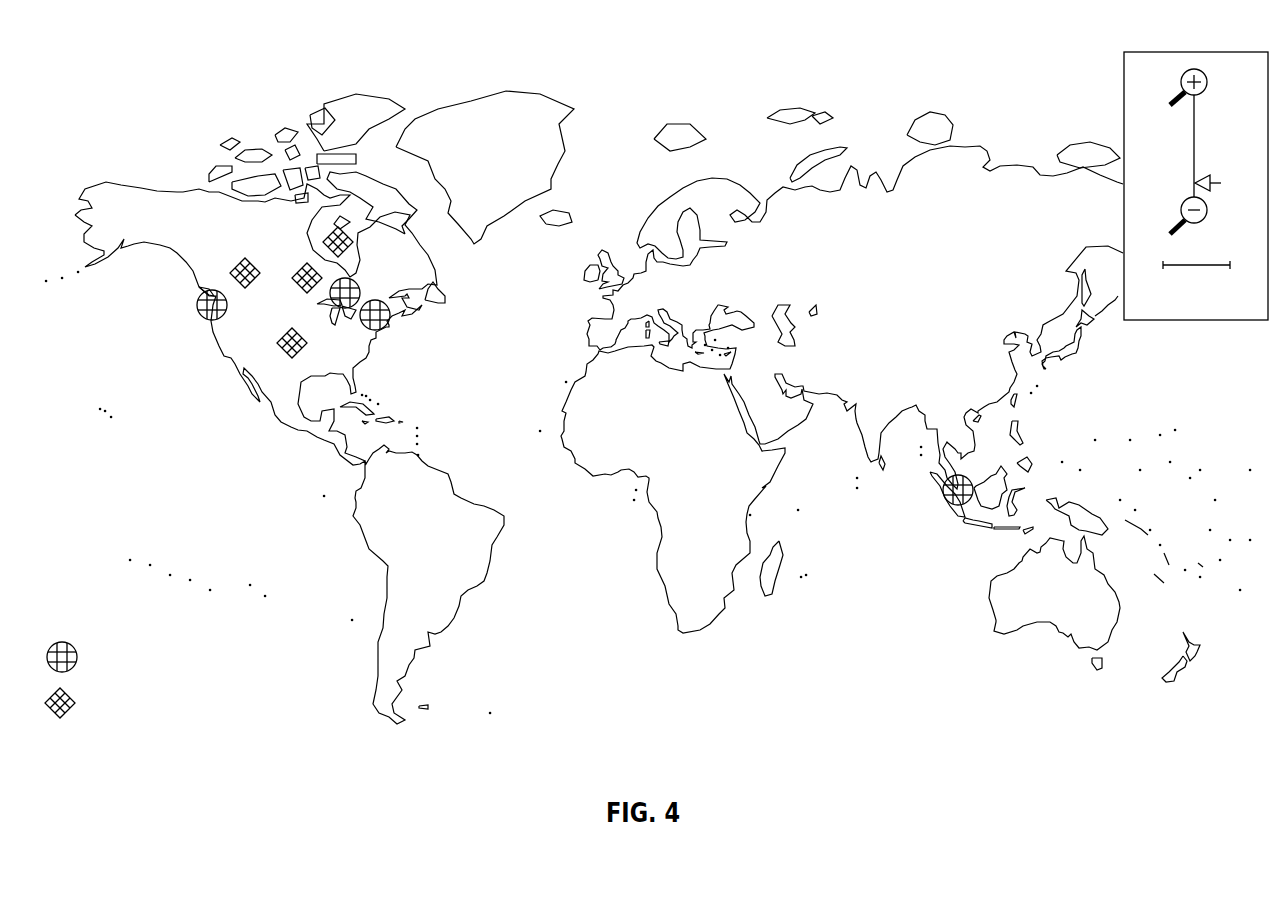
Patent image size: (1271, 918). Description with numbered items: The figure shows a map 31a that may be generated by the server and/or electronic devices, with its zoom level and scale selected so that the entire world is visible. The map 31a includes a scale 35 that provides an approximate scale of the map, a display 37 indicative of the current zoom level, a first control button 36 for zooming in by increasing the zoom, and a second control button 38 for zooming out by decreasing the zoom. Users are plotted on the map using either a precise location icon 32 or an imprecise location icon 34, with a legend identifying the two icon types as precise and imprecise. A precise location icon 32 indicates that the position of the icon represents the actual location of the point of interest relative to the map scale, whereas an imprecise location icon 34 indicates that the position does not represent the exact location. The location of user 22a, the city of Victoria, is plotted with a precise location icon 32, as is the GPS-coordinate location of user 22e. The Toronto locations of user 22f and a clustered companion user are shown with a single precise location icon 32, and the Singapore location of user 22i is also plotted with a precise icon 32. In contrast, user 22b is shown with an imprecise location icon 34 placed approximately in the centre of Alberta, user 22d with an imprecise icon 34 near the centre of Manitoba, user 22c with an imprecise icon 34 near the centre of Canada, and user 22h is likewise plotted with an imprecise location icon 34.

The map 31a is at (130, 92).
The user 22a is at (204, 318).
The user 22b is at (233, 262).
The user 22c is at (319, 236).
The user 22d is at (295, 274).
The user 22e is at (354, 280).
The user 22f is at (378, 331).
The user 22h is at (279, 347).
The user 22i is at (944, 495).
The precise location icon 32 is at (64, 642).
The imprecise location icon 34 is at (70, 711).
The scale 35 is at (1194, 204).
The first control button 36 is at (1184, 74).
The display 37 is at (1210, 148).
The second control button 38 is at (1182, 208).